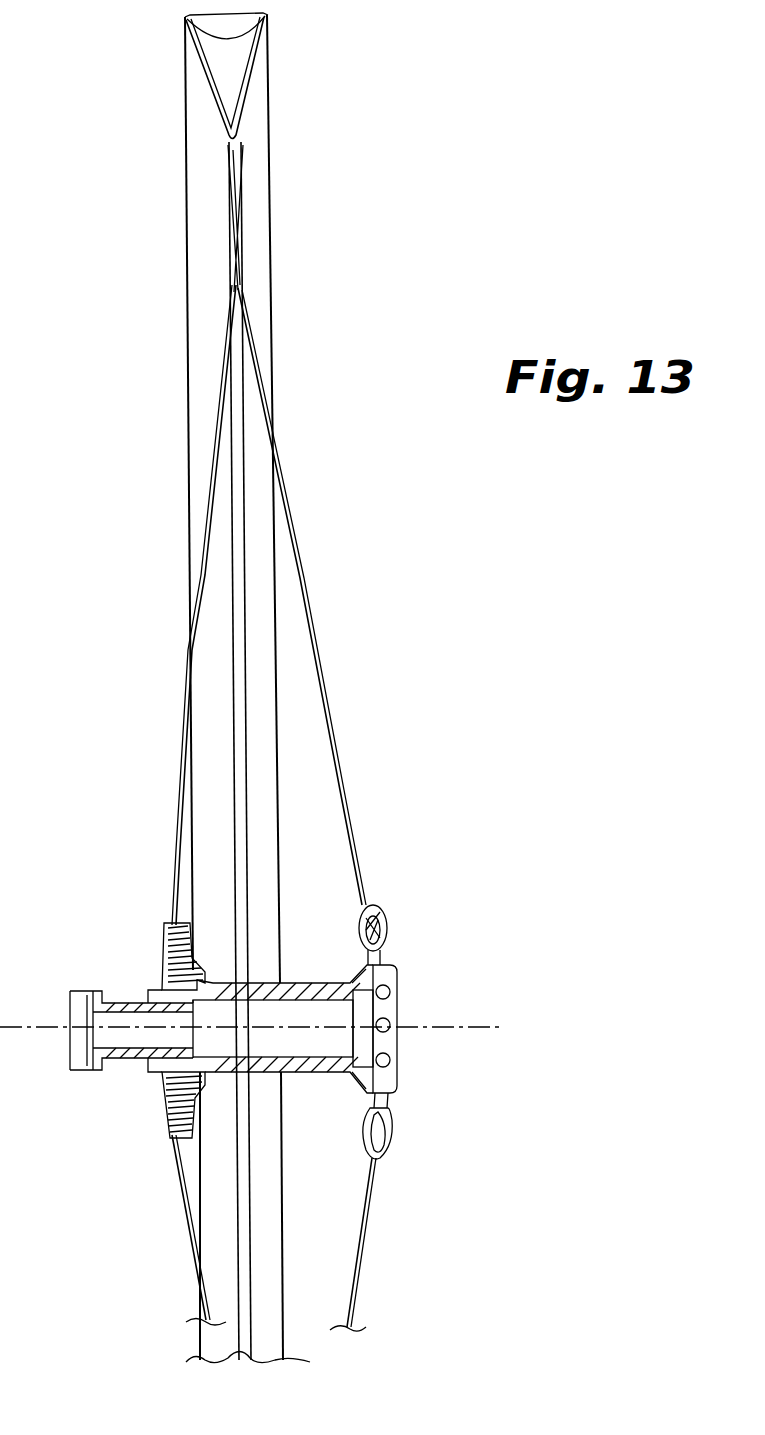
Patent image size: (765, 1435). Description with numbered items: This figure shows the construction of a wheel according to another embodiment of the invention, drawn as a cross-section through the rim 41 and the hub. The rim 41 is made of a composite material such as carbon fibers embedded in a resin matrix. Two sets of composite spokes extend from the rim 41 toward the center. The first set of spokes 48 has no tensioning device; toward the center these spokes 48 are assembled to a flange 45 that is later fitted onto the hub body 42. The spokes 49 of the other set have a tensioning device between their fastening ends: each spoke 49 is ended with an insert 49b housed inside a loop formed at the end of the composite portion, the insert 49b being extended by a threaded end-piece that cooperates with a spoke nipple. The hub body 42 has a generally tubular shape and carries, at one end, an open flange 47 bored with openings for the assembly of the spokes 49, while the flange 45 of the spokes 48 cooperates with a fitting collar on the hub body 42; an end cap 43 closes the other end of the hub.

The rim 41 is at (200, 341).
The hub body 42 is at (320, 1073).
The end cap 43 is at (90, 990).
The flange 45 is at (166, 1094).
The open flange 47 is at (397, 1000).
The spokes 48 is at (190, 632).
The spokes 49 is at (320, 671).
The insert 49b is at (387, 913).